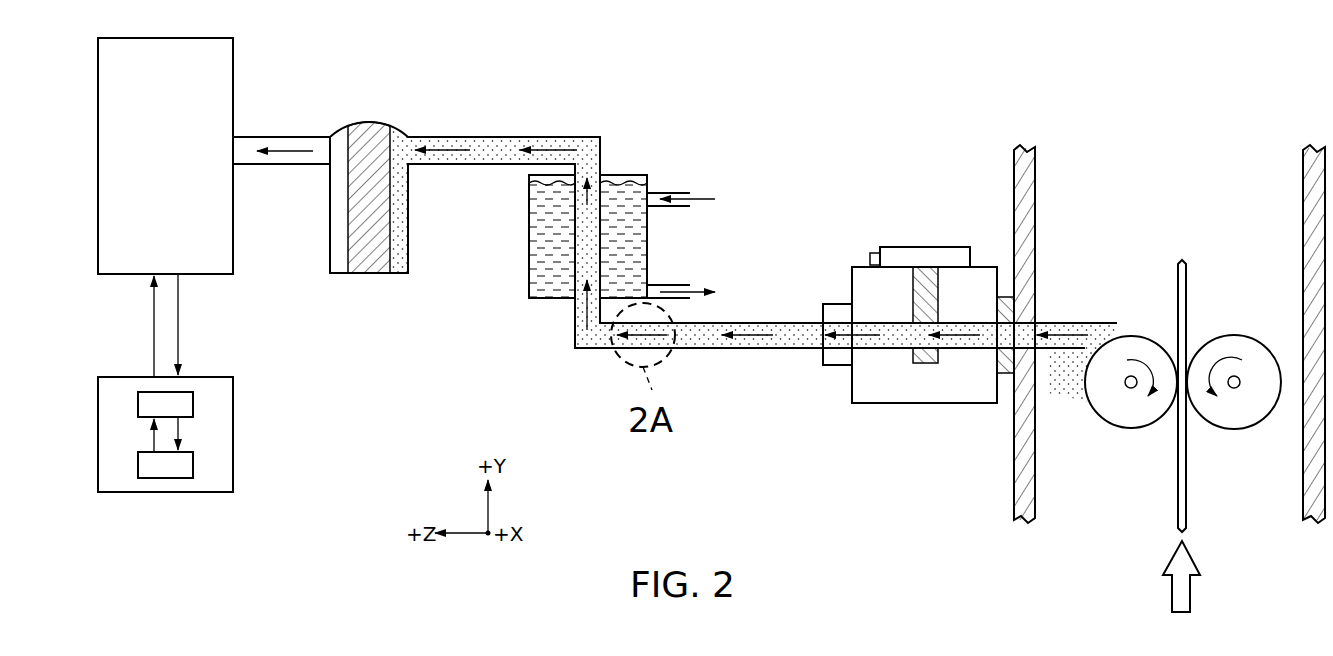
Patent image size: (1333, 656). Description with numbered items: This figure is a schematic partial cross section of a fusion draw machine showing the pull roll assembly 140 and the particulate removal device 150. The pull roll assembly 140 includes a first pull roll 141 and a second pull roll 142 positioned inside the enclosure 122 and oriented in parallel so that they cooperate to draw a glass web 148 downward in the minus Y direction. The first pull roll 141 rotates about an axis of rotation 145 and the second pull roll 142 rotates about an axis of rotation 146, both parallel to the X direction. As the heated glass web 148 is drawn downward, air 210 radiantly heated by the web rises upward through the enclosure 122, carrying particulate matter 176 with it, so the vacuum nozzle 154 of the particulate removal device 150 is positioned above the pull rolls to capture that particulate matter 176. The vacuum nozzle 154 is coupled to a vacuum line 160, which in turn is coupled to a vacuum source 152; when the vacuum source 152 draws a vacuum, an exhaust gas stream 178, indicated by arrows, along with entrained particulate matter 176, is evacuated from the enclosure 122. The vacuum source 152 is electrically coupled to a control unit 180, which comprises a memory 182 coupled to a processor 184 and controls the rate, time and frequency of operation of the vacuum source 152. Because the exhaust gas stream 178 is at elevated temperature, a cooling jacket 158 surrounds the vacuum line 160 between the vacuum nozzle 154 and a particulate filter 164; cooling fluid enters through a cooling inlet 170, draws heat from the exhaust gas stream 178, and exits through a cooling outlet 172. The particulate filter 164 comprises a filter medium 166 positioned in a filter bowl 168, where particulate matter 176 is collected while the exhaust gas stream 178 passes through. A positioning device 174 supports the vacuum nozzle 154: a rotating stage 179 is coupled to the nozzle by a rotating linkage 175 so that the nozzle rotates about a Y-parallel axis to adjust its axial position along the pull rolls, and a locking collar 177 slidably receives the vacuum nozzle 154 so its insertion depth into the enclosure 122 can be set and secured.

The enclosure 122 is at (998, 185).
The pull roll assembly 140 is at (1106, 91).
The first pull roll 141 is at (1131, 392).
The second pull roll 142 is at (1234, 392).
The axis of rotation 145 is at (1132, 376).
The axis of rotation 146 is at (1236, 376).
The glass web 148 is at (1187, 282).
The particulate removal device 150 is at (794, 121).
The vacuum source 152 is at (233, 54).
The vacuum nozzle 154 is at (1076, 312).
The cooling jacket 158 is at (620, 172).
The vacuum line 160 is at (585, 350).
The particulate filter 164 is at (361, 283).
The filter medium 166 is at (392, 212).
The filter bowl 168 is at (330, 210).
The cooling inlet 170 is at (672, 193).
The cooling outlet 172 is at (672, 285).
The positioning device 174 is at (907, 416).
The rotating linkage 175 is at (913, 312).
The particulate matter 176 is at (1068, 399).
The locking collar 177 is at (830, 304).
The exhaust gas stream 178 is at (283, 149).
The rotating stage 179 is at (925, 247).
The control unit 180 is at (174, 383).
The memory 182 is at (138, 406).
The processor 184 is at (138, 465).
The air 210 is at (1190, 592).